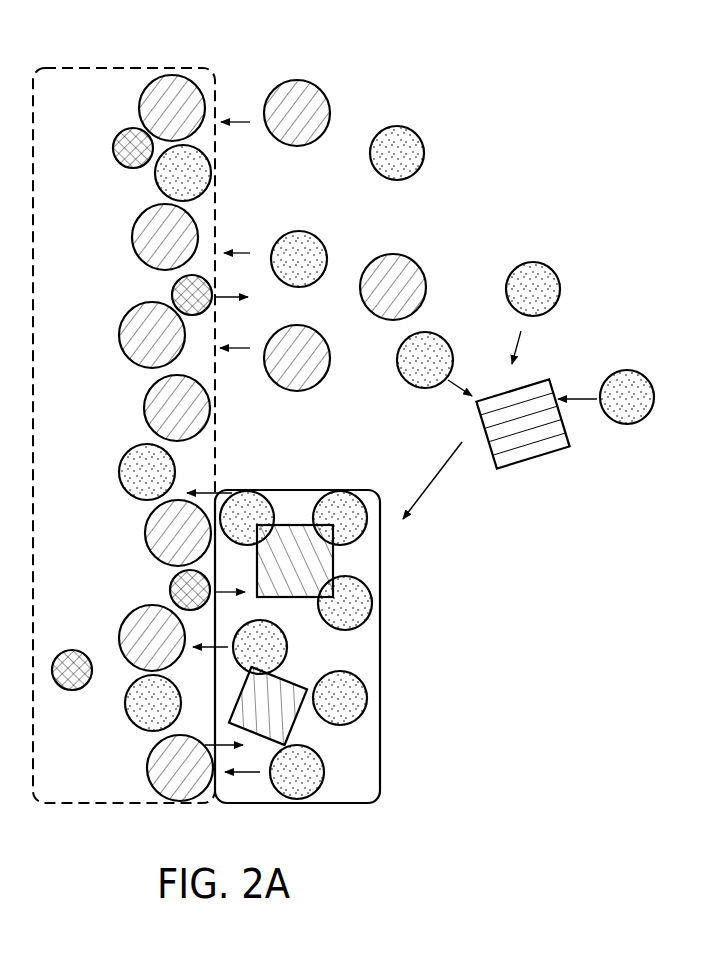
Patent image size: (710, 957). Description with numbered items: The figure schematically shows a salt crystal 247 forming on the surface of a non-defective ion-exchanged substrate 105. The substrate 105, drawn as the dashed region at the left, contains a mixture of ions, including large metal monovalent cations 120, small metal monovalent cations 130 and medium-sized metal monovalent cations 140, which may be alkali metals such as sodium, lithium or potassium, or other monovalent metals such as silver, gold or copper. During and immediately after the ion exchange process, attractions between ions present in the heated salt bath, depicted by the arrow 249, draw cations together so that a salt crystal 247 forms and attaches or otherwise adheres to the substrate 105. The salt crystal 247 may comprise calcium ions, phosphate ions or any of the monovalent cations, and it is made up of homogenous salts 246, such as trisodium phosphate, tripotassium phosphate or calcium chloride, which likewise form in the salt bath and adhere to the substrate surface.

The non-defective ion-exchanged substrate 105 is at (68, 788).
The large metal monovalent cations 120 is at (297, 80).
The small metal monovalent cations 130 is at (113, 148).
The medium-sized metal monovalent cations 140 is at (533, 262).
The homogenous salt 246 is at (313, 730).
The salt crystal 247 is at (240, 793).
The arrow 249 is at (430, 483).